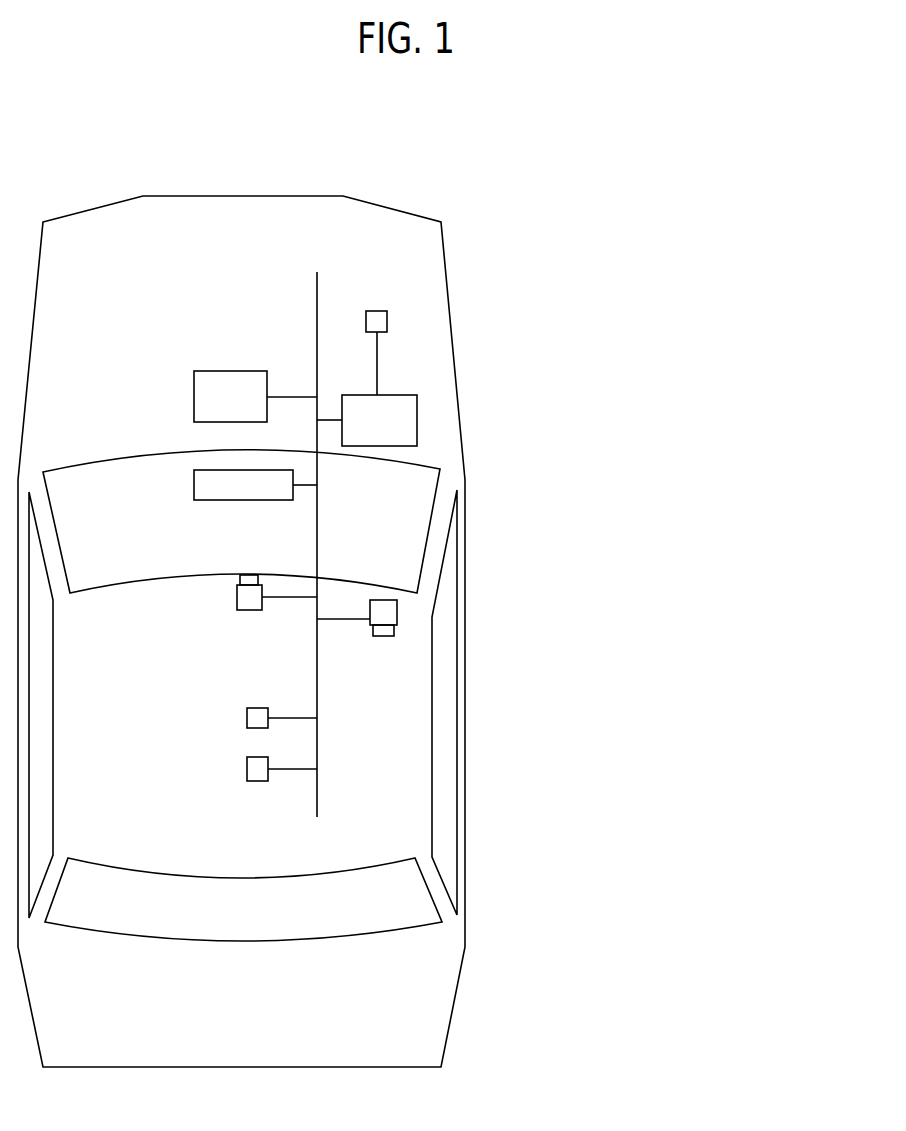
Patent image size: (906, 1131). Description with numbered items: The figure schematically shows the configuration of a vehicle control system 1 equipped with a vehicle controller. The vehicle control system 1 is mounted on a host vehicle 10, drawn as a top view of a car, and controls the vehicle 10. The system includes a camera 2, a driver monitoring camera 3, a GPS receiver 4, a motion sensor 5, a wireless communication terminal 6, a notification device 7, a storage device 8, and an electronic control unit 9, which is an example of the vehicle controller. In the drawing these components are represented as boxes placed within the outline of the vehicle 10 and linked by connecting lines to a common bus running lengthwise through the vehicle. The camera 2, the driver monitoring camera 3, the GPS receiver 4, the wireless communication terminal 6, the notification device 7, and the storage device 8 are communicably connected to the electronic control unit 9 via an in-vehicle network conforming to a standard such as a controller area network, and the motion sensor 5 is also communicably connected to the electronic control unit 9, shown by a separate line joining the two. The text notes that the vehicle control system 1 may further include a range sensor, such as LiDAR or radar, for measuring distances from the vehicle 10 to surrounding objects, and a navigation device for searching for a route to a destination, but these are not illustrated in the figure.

The vehicle control system 1 is at (465, 918).
The camera 2 is at (235, 598).
The driver monitoring camera 3 is at (397, 605).
The GPS receiver 4 is at (246, 716).
The motion sensor 5 is at (387, 322).
The wireless communication terminal 6 is at (246, 769).
The notification device 7 is at (193, 480).
The storage device 8 is at (193, 390).
The electronic control unit 9 is at (417, 420).
The host vehicle 10 is at (712, 934).